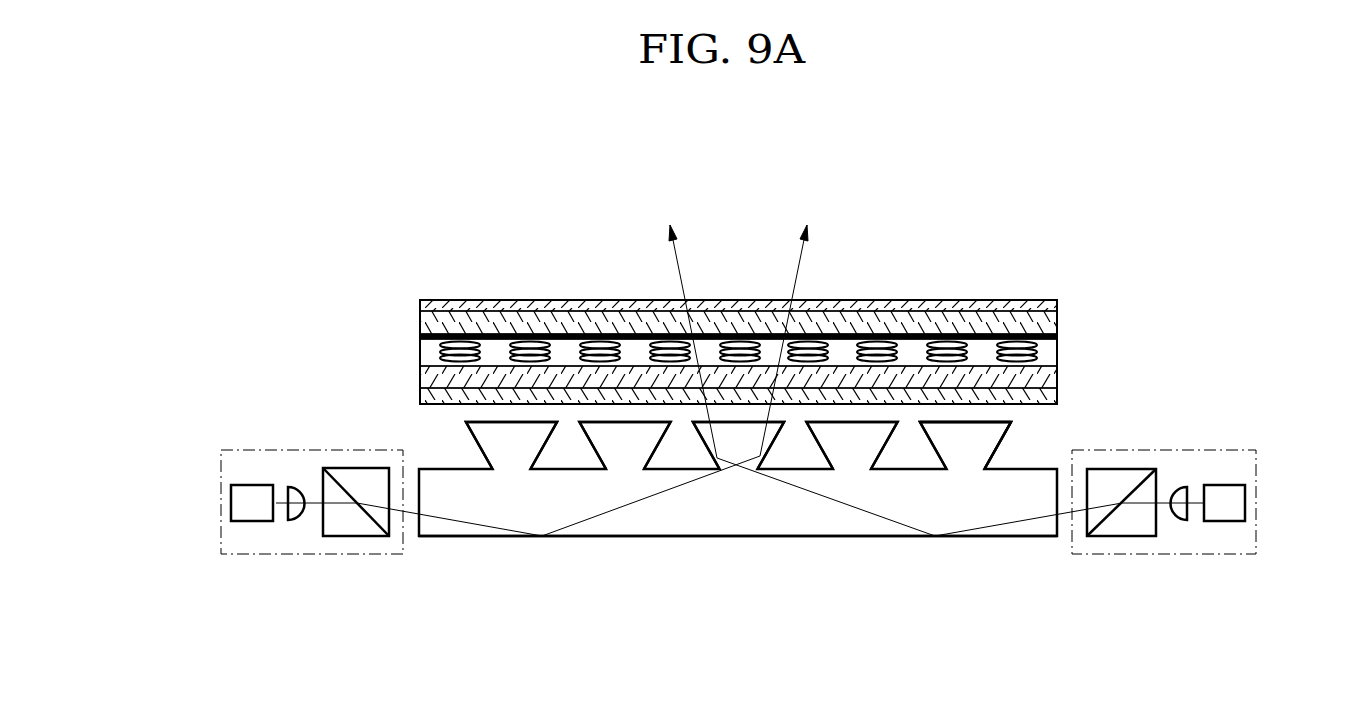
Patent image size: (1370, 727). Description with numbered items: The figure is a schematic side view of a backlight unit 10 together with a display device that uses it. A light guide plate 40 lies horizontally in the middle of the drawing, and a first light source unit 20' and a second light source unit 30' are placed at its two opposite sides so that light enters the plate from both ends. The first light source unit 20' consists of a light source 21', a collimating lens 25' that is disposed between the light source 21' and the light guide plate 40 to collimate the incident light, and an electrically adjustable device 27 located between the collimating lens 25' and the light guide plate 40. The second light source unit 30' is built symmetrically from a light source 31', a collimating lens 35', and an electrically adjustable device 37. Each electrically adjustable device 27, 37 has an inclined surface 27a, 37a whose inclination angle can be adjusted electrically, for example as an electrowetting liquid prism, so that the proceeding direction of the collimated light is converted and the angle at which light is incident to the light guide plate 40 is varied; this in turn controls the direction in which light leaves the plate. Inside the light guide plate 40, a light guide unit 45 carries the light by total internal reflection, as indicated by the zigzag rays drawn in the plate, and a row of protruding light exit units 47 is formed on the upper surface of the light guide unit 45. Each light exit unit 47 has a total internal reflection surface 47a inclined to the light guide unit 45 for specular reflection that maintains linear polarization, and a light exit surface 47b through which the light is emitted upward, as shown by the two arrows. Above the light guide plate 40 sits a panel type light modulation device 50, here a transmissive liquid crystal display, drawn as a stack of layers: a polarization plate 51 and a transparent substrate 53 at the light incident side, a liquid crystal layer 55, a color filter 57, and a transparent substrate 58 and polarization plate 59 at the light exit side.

The backlight unit 10 is at (1288, 422).
The first light source unit 20' is at (312, 497).
The light source 21' is at (252, 547).
The collimating lens 25' is at (300, 548).
The electrically adjustable device 27 is at (349, 496).
The inclined surface 27a is at (365, 512).
The second light source unit 30' is at (1164, 499).
The light source 31' is at (1225, 549).
The collimating lens 35' is at (1185, 548).
The electrically adjustable device 37 is at (1121, 497).
The inclined surface 37a is at (1118, 508).
The light guide plate 40 is at (745, 510).
The light guide unit 45 is at (738, 526).
The light exit units 47 is at (940, 433).
The total internal reflection surface 47a is at (990, 447).
The light exit surface 47b is at (993, 418).
The panel type light modulation device 50 is at (746, 341).
The polarization plate 51 is at (422, 398).
The transparent substrate 53 is at (422, 376).
The liquid crystal layer 55 is at (422, 352).
The color filter 57 is at (420, 336).
The transparent substrate 58 is at (422, 318).
The polarization plate 59 is at (420, 300).